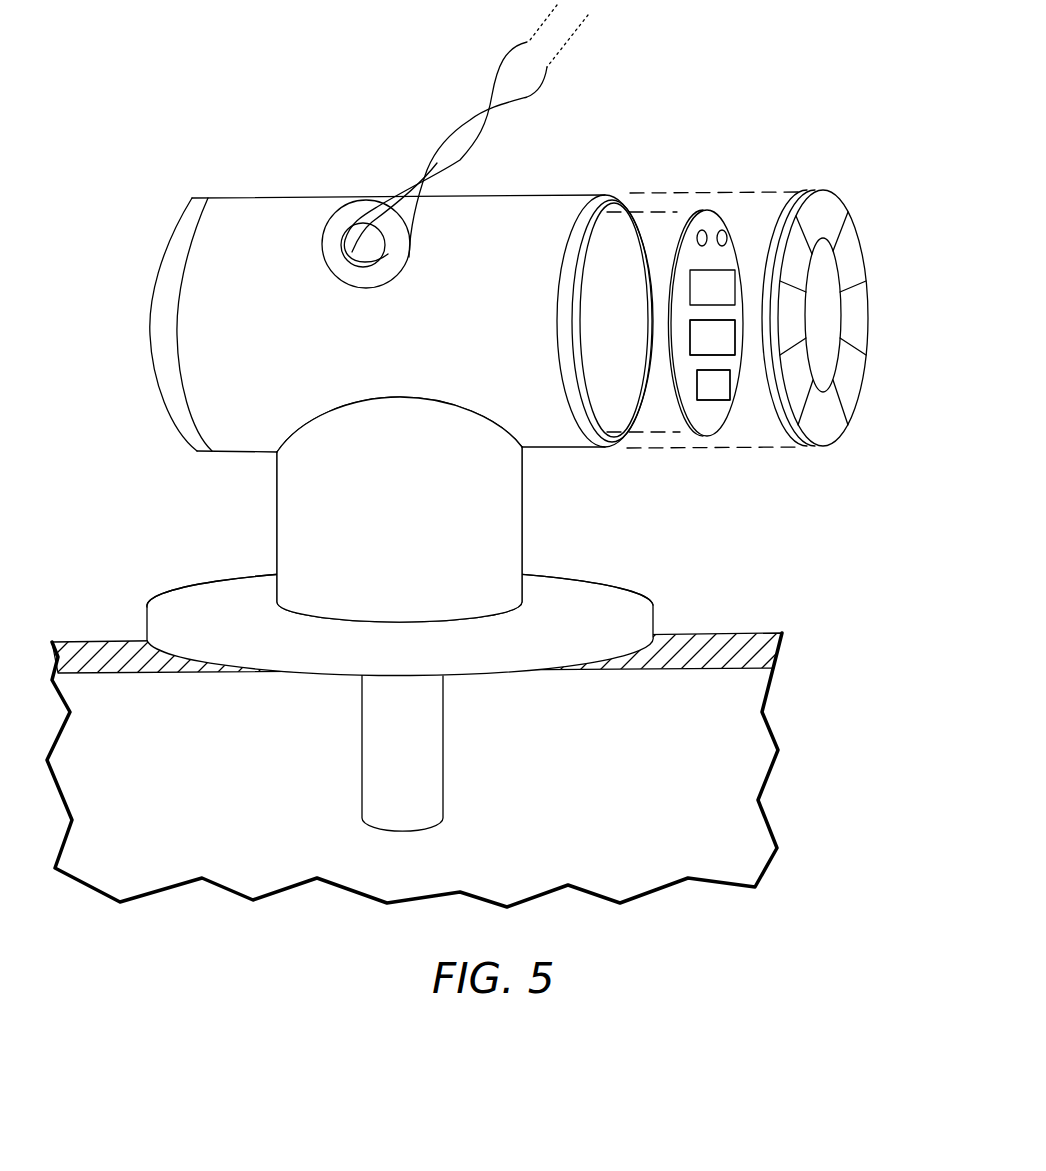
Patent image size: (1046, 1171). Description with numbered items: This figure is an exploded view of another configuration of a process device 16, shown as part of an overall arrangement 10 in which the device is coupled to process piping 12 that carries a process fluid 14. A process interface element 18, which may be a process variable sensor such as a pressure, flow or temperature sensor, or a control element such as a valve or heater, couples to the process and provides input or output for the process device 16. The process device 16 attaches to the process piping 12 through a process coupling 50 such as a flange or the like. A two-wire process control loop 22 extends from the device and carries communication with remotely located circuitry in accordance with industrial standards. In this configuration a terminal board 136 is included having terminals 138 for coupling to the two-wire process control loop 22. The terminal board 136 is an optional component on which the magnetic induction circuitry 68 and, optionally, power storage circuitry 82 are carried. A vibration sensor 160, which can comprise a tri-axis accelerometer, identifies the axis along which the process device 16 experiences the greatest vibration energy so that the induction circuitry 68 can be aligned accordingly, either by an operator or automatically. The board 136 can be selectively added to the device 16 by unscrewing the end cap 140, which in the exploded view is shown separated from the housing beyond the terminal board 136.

The light fixture assembly 10 is at (486, 340).
The process piping 12 is at (703, 632).
The process fluid 14 is at (595, 799).
The process device 16 is at (222, 195).
The process interface element 18 is at (377, 748).
The process control loop 22 is at (467, 157).
The process coupling 50 is at (620, 595).
The magnetic induction circuitry 68 is at (730, 267).
The power storage circuitry 82 is at (690, 343).
The terminal board 136 is at (728, 430).
The terminals 138 is at (720, 230).
The end cap 140 is at (837, 187).
The vibration sensor 160 is at (697, 388).